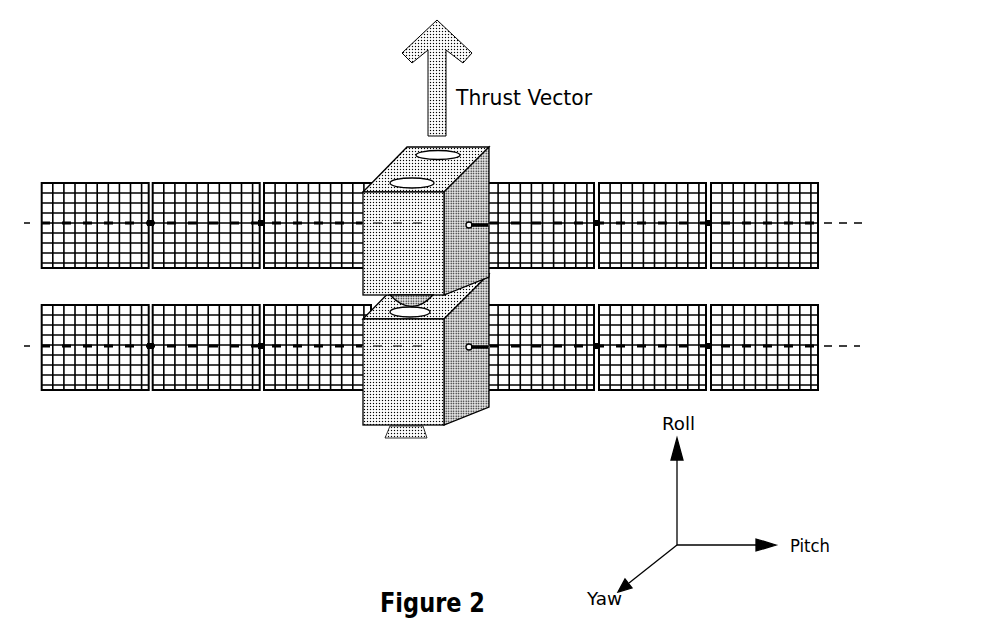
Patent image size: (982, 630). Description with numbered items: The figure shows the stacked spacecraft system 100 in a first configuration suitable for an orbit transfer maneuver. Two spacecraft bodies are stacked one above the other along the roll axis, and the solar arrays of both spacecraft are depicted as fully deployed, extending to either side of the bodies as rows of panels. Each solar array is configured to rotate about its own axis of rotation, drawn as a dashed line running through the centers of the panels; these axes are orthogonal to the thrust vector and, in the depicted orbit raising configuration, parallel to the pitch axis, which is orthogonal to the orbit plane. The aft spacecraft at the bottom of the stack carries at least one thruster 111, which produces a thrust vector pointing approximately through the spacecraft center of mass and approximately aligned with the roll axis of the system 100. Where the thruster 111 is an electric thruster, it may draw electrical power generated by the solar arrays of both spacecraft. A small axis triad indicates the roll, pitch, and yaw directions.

The stacked spacecraft system 100 is at (466, 274).
The thruster 111 is at (386, 431).